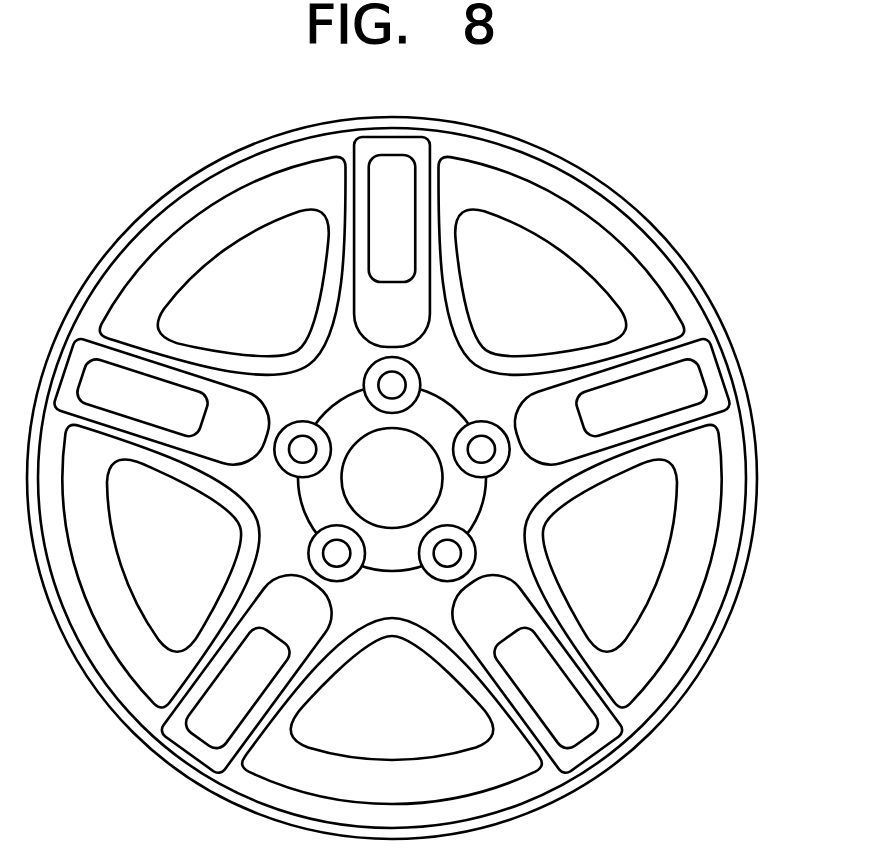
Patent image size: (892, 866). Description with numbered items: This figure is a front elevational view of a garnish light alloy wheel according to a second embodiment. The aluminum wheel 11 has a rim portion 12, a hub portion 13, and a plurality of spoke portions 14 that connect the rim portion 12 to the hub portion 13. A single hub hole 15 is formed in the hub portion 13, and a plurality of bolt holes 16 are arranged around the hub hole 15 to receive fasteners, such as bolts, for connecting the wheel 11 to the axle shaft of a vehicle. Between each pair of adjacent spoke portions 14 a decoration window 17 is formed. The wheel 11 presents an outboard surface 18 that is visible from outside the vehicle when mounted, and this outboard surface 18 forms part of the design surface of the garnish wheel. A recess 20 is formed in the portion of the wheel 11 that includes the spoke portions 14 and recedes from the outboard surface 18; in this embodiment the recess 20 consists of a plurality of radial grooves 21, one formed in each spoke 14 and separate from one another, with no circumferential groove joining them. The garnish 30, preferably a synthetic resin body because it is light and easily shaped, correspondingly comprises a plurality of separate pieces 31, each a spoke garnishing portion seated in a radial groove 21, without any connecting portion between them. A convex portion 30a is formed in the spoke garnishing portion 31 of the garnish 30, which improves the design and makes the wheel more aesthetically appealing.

The aluminum wheel 11 is at (418, 475).
The rim portion 12 is at (624, 200).
The hub portion 13 is at (506, 395).
The spoke portion 14 is at (615, 350).
The hub hole 15 is at (363, 458).
The bolt hole 16 is at (447, 552).
The decoration window 17 is at (494, 225).
The outboard surface 18 is at (728, 437).
The recess 20 is at (387, 210).
The radial groove 21 is at (387, 210).
The garnish 30 is at (457, 210).
The spoke garnishing portion 31 is at (402, 145).
The convex portion 30a is at (362, 229).